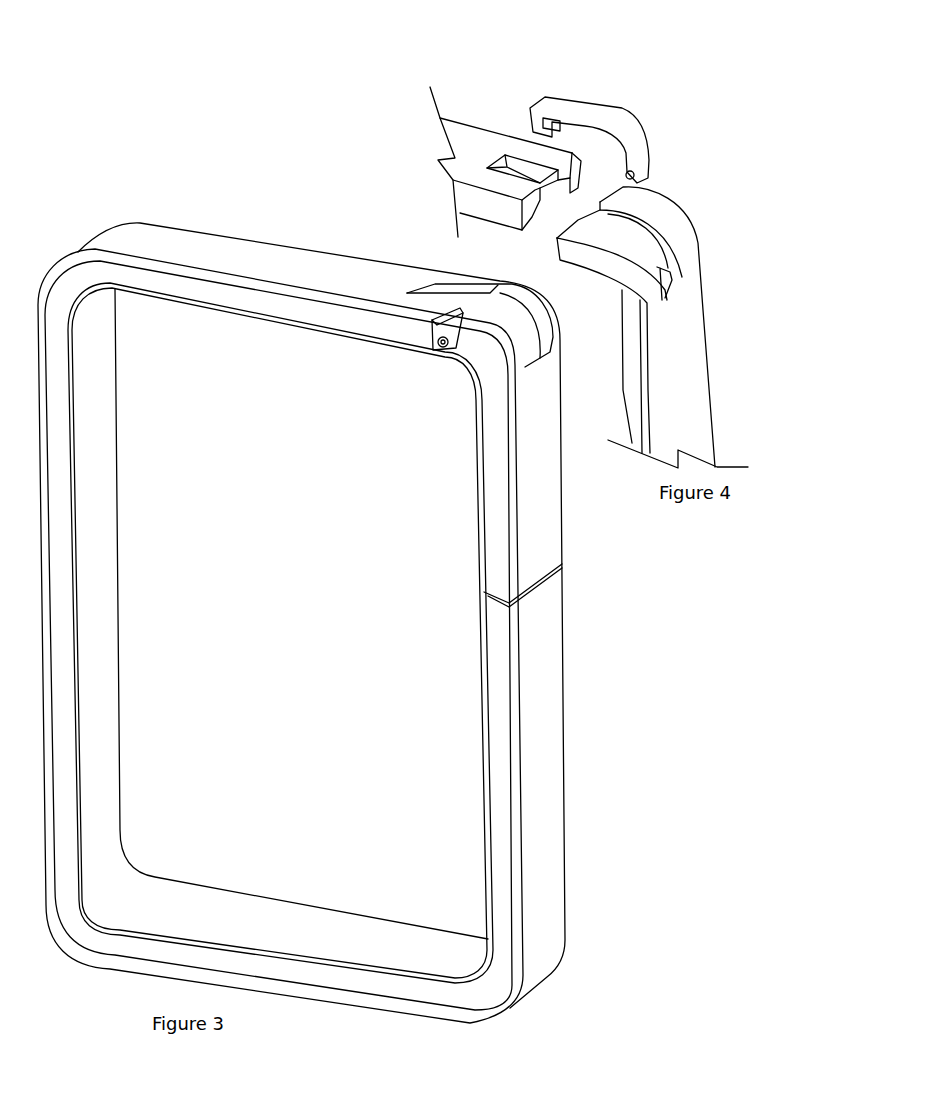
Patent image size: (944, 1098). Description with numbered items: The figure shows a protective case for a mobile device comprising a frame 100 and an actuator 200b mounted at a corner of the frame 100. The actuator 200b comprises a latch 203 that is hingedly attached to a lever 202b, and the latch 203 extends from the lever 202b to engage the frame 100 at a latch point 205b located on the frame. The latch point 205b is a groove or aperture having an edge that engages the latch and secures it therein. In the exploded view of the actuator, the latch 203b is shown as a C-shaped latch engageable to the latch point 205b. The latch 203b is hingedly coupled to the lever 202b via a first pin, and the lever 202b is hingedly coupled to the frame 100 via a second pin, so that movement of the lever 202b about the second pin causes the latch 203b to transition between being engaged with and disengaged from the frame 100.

In FIG. 3, the frame 100 is at (550, 623).
In FIG. 3, the actuator 200b is at (484, 290).
In FIG. 4, the actuator 200b is at (660, 245).
In FIG. 4, the lever 202b is at (683, 208).
In FIG. 3, the latch 203 is at (490, 312).
In FIG. 4, the latch 203b is at (557, 98).
In FIG. 4, the latch point 205b is at (520, 173).